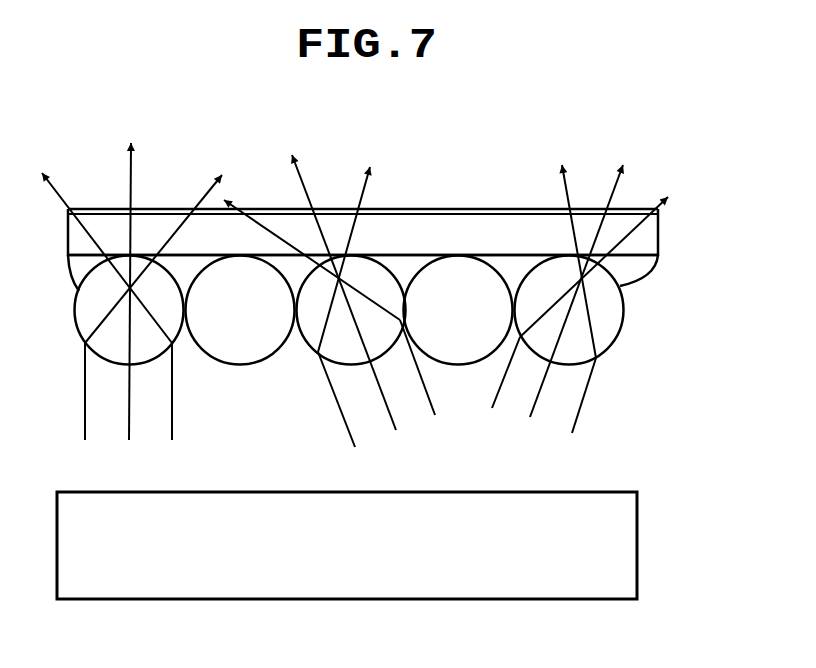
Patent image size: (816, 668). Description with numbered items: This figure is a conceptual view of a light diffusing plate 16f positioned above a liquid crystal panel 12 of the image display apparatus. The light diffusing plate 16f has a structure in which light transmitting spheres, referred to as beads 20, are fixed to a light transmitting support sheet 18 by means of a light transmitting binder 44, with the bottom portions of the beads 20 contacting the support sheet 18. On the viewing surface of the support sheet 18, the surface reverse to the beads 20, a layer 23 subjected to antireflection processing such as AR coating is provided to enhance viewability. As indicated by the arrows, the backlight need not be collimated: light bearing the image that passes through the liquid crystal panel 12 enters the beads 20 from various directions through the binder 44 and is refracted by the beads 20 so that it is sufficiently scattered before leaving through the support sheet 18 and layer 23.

The light diffusing plate 16f is at (399, 229).
The support sheet 18 is at (648, 238).
The beads 20 is at (612, 327).
The antireflection layer 23 is at (485, 208).
The binder 44 is at (405, 271).
The liquid crystal panel 12 is at (622, 553).